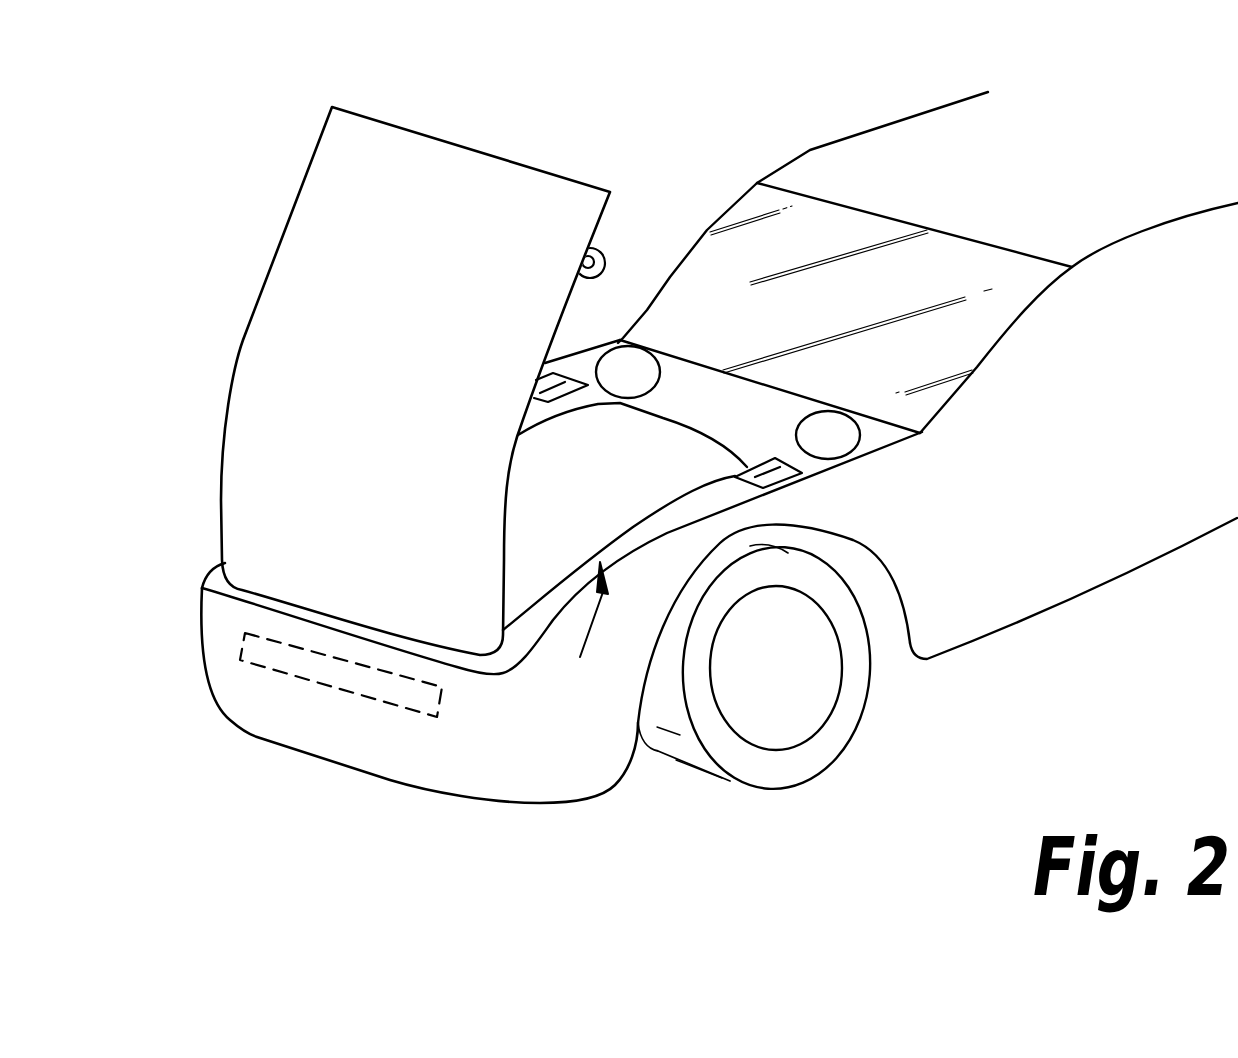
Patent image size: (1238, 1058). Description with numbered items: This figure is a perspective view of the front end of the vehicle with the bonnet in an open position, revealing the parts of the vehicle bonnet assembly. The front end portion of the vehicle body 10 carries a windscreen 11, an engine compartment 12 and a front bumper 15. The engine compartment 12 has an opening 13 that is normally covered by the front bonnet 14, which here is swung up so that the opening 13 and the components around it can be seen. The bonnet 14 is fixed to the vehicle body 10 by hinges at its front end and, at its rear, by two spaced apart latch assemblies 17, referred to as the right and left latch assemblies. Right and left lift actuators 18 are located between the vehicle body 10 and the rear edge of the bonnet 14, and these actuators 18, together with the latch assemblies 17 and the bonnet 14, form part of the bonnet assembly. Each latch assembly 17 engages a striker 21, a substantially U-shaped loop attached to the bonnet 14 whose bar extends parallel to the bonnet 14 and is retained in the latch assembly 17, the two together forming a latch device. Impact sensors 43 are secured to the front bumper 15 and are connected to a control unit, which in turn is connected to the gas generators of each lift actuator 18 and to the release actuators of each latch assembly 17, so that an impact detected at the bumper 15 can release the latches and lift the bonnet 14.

The vehicle body 10 is at (882, 433).
The windscreen 11 is at (859, 309).
The engine compartment 12 is at (548, 555).
The opening 13 is at (585, 628).
The front bonnet 14 is at (409, 379).
The front bumper 15 is at (323, 733).
The latch assemblies 17 is at (563, 399).
The lift actuators 18 is at (638, 370).
The striker 21 is at (605, 261).
The impact sensors 43 is at (280, 662).